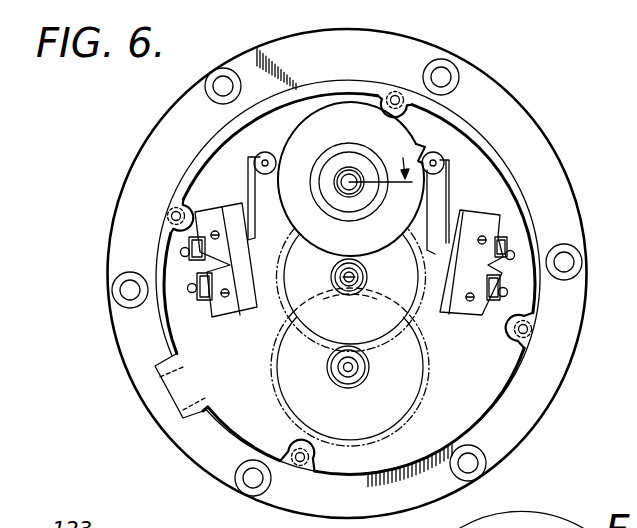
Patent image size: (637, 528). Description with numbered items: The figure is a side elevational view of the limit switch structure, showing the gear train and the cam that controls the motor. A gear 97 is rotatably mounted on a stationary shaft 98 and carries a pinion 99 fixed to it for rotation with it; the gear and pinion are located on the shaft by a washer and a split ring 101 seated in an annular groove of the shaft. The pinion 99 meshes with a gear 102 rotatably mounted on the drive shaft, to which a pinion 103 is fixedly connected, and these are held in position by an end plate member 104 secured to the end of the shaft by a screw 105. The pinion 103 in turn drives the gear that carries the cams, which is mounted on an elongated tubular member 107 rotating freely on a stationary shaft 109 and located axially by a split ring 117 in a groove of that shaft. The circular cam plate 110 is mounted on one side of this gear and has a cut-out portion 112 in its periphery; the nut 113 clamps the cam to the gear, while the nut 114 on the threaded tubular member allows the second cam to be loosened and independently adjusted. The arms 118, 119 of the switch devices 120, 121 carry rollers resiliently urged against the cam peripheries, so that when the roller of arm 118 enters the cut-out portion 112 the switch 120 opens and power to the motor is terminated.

The gear 97 is at (415, 369).
The stationary shaft 98 is at (361, 367).
The pinion 99 is at (332, 377).
The split ring 101 is at (351, 382).
The gear 102 is at (400, 310).
The pinion 103 is at (355, 297).
The end plate member 104 is at (357, 273).
The screw 105 is at (336, 286).
The elongated tubular member 107 is at (342, 197).
The stationary shaft 109 is at (410, 184).
The circular cam plate 110 is at (362, 120).
The cut-out portion 112 is at (420, 150).
The nut 113 is at (325, 152).
The nut 114 is at (376, 168).
The split ring 117 is at (358, 190).
The arm 118 is at (452, 178).
The arm 119 is at (250, 195).
The switch device 120 is at (492, 220).
The switch device 121 is at (225, 313).